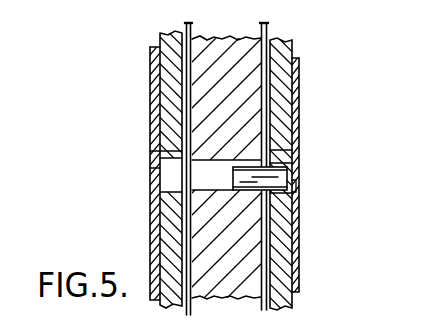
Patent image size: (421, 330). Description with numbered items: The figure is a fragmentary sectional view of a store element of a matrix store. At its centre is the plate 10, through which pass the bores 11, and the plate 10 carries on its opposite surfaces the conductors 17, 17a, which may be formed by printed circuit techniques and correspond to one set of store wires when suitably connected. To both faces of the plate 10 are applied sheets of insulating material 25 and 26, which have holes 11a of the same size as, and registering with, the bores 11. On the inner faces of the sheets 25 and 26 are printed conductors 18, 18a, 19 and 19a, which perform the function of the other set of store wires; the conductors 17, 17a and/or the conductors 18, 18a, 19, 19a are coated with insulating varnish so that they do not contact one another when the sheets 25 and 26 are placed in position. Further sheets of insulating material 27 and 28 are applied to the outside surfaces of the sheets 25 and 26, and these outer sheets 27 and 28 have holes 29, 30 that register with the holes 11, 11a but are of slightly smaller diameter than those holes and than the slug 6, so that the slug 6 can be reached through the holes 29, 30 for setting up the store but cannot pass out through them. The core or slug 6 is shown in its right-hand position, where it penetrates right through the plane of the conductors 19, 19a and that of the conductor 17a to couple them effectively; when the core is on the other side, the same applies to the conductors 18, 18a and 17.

The plate 10 is at (225, 44).
The sheet of insulating material 28 is at (154, 48).
The sheet of insulating material 26 is at (165, 64).
The conductor 17 is at (186, 92).
The conductor 18 is at (158, 149).
The hole 30 is at (152, 173).
The conductor 18a is at (183, 197).
The bore 11 is at (182, 211).
The sheet of insulating material 27 is at (297, 68).
The conductor 17a is at (265, 103).
The sheet of insulating material 25 is at (290, 120).
The conductor 19 is at (272, 149).
The hole 11a is at (286, 163).
The hole 29 is at (293, 186).
The conductor 19a is at (290, 212).
The slug 6 is at (232, 176).